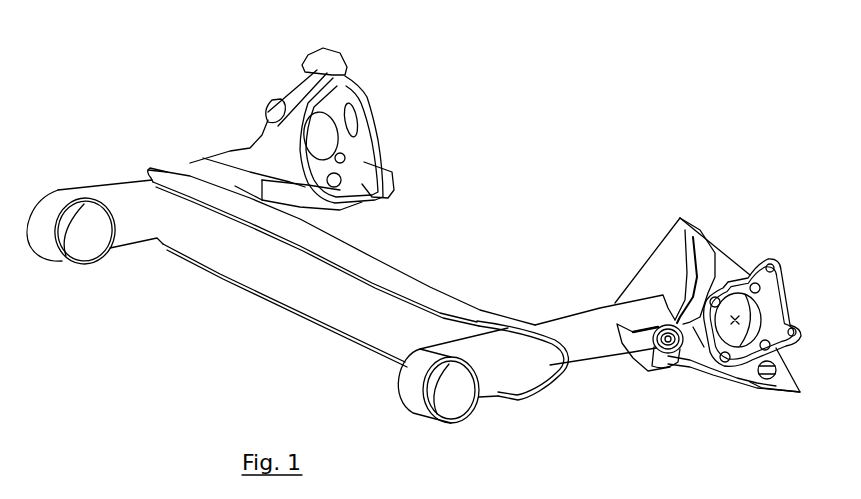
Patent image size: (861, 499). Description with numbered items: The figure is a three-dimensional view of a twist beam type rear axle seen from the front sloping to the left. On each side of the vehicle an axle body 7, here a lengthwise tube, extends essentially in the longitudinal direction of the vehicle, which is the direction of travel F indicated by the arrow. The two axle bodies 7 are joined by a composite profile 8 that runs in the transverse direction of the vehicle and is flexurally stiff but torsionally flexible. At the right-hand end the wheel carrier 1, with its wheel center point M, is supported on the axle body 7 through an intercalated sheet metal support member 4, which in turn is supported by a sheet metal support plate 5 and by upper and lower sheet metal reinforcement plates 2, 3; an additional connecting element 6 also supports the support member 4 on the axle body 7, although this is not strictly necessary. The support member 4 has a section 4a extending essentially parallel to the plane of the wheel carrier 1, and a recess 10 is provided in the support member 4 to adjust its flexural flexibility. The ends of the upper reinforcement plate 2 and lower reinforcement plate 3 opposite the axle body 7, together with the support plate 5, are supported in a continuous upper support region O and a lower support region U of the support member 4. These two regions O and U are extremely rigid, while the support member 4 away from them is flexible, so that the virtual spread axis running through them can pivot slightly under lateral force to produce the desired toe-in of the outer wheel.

The wheel carrier 1 is at (749, 268).
The sheet metal reinforcement plate 2 is at (290, 98).
The sheet metal reinforcement plate 3 is at (300, 205).
The support member 4 is at (378, 157).
The section 4a is at (792, 395).
The sheet metal support plate 5 is at (346, 79).
The connecting element 6 is at (668, 363).
The axle body 7 is at (220, 177).
The composite profile 8 is at (390, 264).
The recess 10 is at (362, 121).
The upper support region O is at (323, 48).
The lower support region U is at (387, 196).
The wheel center point M is at (740, 314).
The direction of travel F is at (227, 338).